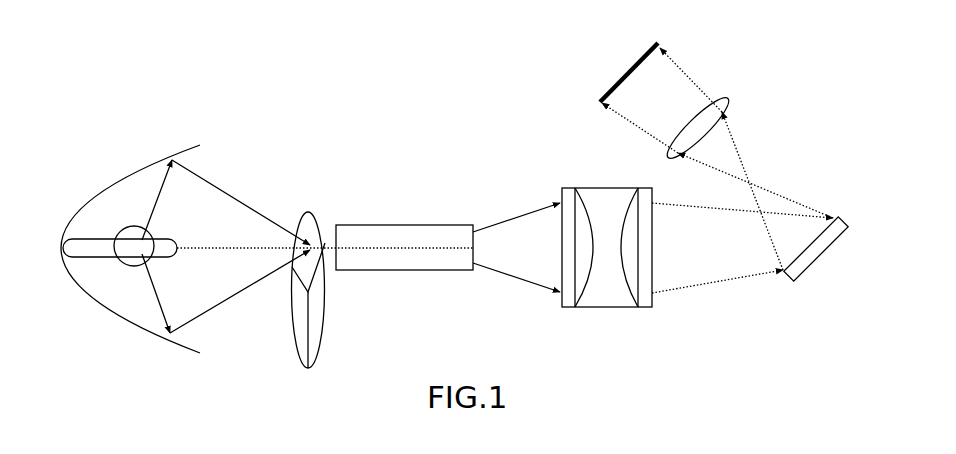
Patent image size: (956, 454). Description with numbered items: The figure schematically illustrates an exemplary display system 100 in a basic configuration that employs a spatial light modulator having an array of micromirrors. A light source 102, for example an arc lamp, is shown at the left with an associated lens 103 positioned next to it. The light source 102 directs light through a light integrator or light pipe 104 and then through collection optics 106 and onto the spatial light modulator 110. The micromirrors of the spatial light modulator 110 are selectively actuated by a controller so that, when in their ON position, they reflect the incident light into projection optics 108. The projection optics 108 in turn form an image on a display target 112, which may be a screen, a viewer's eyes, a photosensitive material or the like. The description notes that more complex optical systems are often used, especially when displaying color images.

The illumination system 100 is at (373, 132).
The light source 102 is at (143, 164).
The lens 103 is at (325, 330).
The light pipe 104 is at (375, 225).
The collection optics 106 is at (603, 188).
The projection optics 108 is at (720, 98).
The spatial light modulator 110 is at (823, 257).
The display target 112 is at (638, 55).